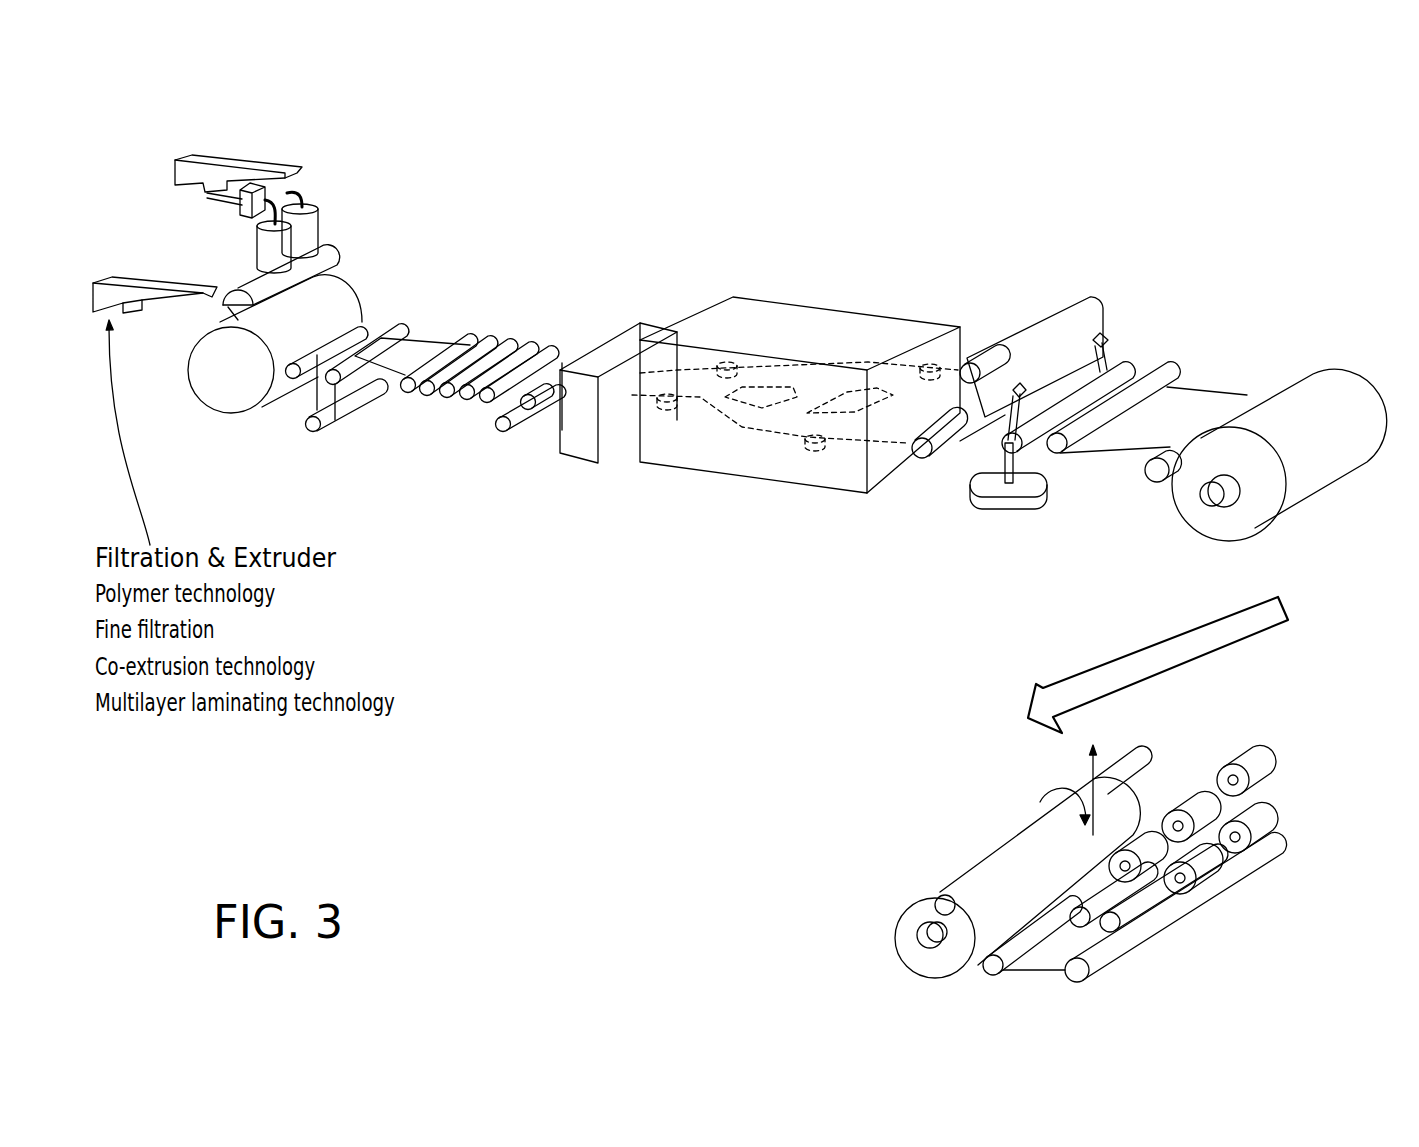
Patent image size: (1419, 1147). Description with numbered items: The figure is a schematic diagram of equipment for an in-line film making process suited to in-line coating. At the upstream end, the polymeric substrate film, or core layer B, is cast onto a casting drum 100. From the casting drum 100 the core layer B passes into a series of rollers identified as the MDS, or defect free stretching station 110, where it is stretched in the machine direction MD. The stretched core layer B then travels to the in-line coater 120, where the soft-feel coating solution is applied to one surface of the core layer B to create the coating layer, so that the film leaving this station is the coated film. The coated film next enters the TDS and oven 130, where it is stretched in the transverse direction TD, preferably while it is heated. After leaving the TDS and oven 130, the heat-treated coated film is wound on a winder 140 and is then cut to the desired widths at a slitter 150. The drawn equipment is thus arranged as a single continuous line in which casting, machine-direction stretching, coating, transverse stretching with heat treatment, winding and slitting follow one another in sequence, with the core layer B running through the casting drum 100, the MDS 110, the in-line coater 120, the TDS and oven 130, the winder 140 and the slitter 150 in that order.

The casting drum 100 is at (335, 309).
The MDS (machine direction stretcher) 110 is at (455, 402).
The in-line coater 120 is at (677, 300).
The TDS and oven 130 is at (752, 480).
The winder 140 is at (1186, 342).
The slitter 150 is at (1091, 847).
The core layer B is at (422, 350).
The machine direction MD is at (763, 396).
The transverse direction TD is at (877, 392).